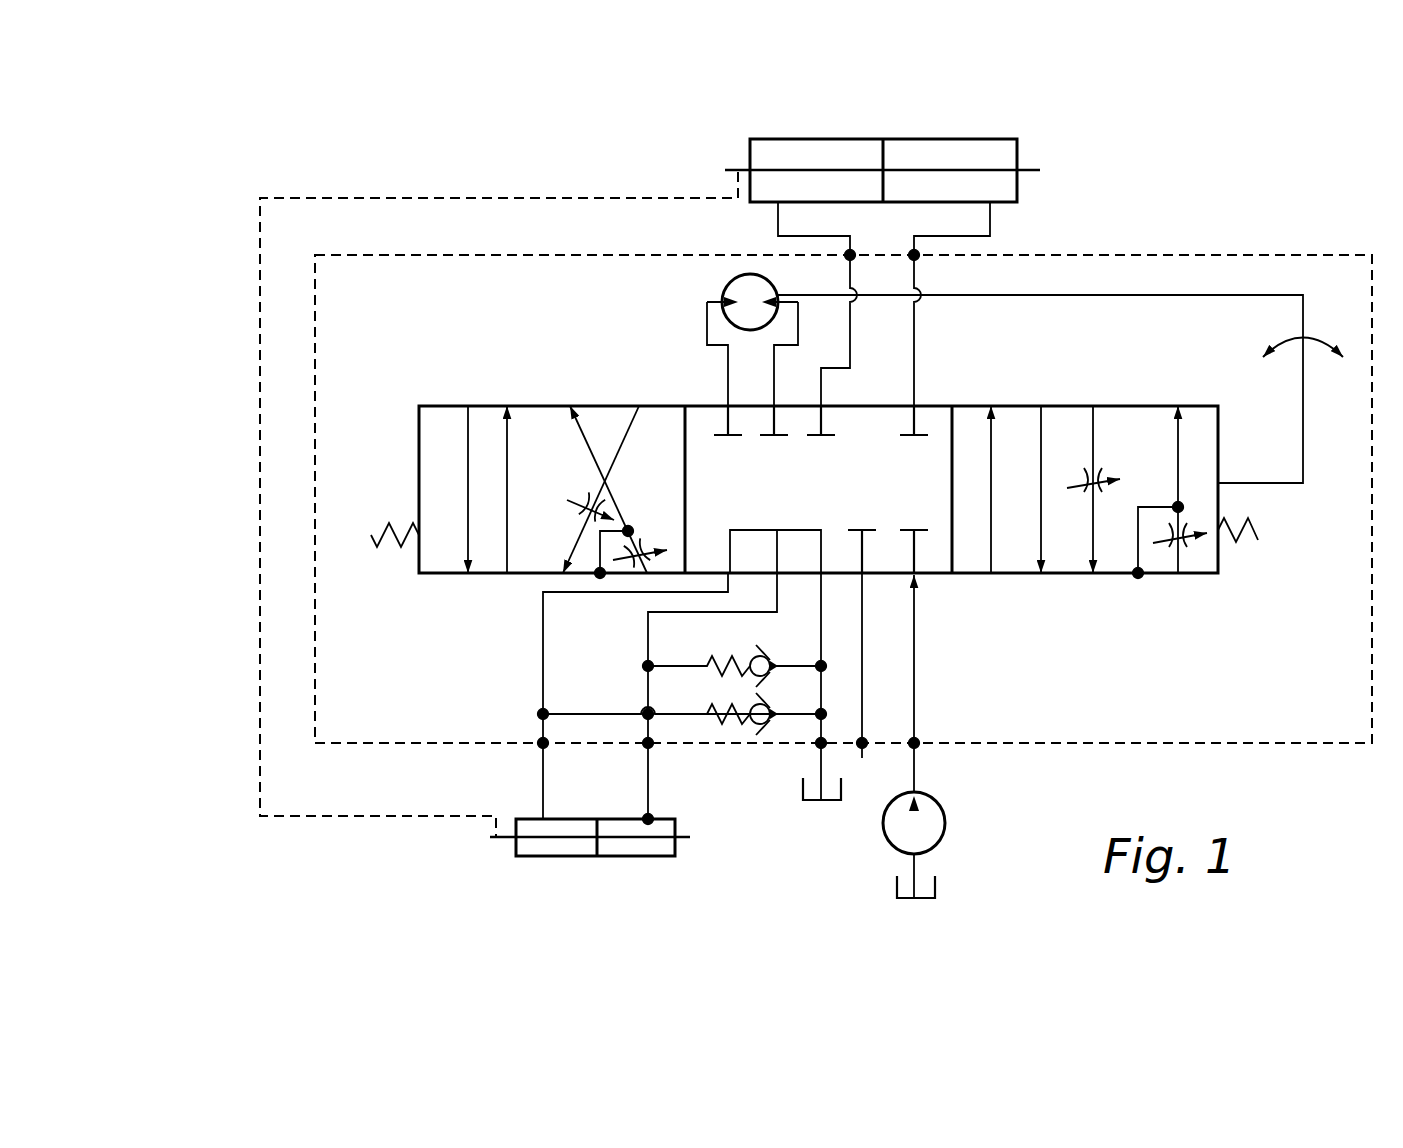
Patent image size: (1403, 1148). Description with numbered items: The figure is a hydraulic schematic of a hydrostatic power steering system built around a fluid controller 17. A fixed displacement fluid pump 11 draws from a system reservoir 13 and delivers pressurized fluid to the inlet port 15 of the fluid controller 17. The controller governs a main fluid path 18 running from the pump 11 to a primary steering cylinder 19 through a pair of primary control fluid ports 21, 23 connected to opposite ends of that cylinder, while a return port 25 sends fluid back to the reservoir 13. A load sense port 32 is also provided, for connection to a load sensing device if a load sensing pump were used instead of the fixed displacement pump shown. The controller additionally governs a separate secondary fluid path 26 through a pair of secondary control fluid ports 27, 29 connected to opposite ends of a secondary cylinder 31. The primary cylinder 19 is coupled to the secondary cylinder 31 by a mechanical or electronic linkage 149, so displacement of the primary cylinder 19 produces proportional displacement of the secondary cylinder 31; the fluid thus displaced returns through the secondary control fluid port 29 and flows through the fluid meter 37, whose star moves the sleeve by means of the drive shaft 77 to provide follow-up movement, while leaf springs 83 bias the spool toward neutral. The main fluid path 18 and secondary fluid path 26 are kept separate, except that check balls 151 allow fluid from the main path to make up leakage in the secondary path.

The fluid pump 11 is at (946, 821).
The system reservoir 13 is at (814, 810).
The inlet port 15 is at (918, 736).
The fluid controller 17 is at (1310, 772).
The main fluid path 18 is at (955, 367).
The primary steering cylinder 19 is at (945, 139).
The primary control fluid port 21 is at (850, 256).
The primary control fluid port 23 is at (915, 256).
The return port 25 is at (815, 760).
The secondary fluid path 26 is at (527, 682).
The secondary control fluid port 27 is at (541, 752).
The secondary control fluid port 29 is at (647, 750).
The secondary cylinder 31 is at (575, 858).
The load sense port 32 is at (862, 736).
The fluid meter 37 is at (730, 281).
The drive shaft 77 is at (1108, 296).
The leaf springs 83 is at (371, 535).
The mechanical or electronic linkage 149 is at (260, 340).
The check balls 151 is at (776, 652).